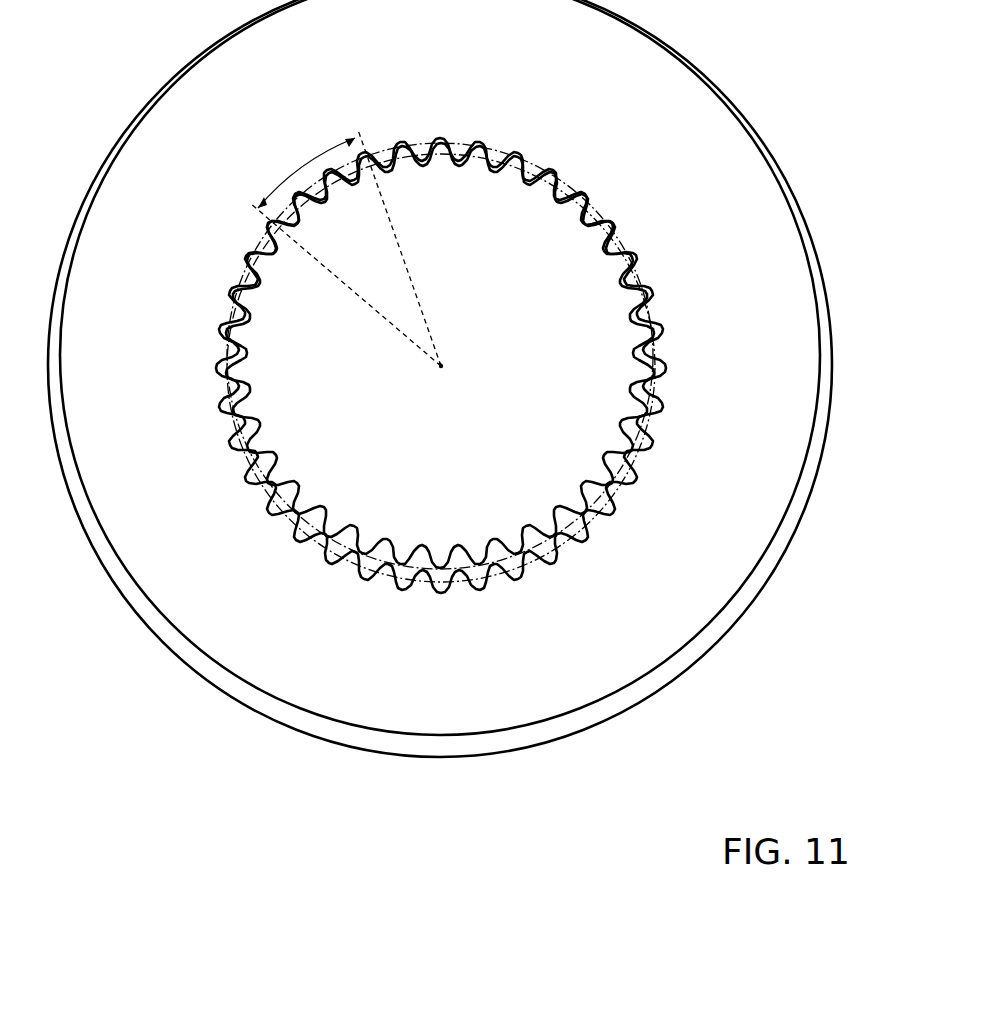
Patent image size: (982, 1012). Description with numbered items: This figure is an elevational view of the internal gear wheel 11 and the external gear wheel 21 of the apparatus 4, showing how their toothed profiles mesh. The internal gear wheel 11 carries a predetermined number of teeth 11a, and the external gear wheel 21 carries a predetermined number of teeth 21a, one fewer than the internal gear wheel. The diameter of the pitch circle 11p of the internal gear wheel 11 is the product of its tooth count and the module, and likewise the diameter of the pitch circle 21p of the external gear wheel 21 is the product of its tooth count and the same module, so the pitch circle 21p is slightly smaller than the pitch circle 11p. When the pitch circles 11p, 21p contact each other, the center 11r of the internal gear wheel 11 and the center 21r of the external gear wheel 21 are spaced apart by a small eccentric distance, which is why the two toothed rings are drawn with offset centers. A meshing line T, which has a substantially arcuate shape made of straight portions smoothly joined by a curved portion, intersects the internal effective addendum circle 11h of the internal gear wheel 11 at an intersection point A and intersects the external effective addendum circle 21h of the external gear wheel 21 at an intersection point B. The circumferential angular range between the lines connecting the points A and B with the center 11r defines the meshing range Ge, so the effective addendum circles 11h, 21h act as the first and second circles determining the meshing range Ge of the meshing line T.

The reclining apparatus 4 is at (778, 101).
The internal gear wheel 11 is at (440, 423).
The pitch circle of the internal gear wheel 11p is at (400, 759).
The teeth of the internal gear wheel 11a is at (658, 368).
The internal effective addendum circle 11h is at (536, 184).
The center of the internal gear wheel 11r is at (447, 370).
The external gear wheel 21 is at (440, 367).
The pitch circle of the external gear wheel 21p is at (472, 734).
The teeth of the external gear wheel 21a is at (642, 345).
The external effective addendum circle 21h is at (542, 168).
The center of the external gear wheel 21r is at (447, 357).
The intersection point A is at (266, 233).
The intersection point B is at (367, 153).
The meshing line T is at (318, 198).
The meshing range Ge is at (345, 248).